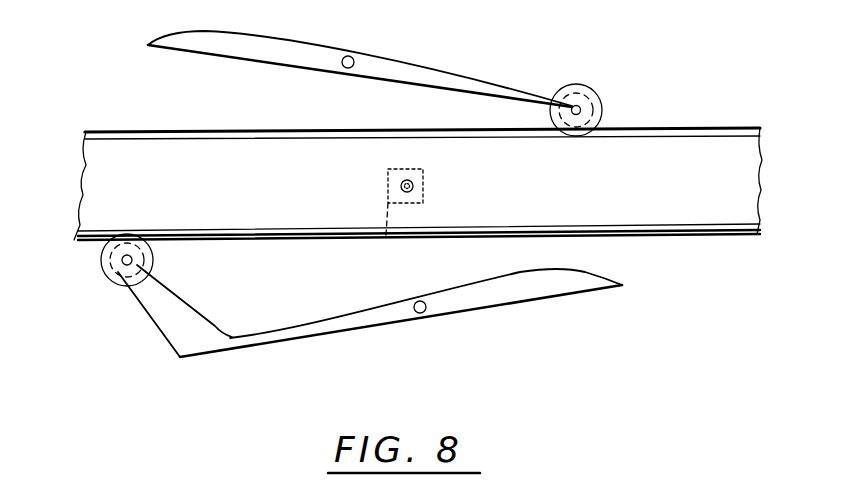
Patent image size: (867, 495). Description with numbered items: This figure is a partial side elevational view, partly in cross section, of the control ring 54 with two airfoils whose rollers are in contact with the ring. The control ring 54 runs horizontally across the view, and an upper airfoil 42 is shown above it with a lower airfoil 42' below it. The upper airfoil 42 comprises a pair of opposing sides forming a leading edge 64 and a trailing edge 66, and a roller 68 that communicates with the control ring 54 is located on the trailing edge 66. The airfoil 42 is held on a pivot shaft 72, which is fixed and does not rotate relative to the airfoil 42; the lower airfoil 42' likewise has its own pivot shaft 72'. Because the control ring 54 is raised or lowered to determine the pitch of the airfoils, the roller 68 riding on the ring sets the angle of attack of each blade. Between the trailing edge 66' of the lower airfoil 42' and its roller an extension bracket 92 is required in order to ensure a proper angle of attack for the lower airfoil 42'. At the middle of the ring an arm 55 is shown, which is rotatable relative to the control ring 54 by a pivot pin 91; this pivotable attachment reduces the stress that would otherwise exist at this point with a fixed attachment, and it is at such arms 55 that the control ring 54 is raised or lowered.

The airfoil 42 is at (360, 69).
The lower airfoil 42' is at (401, 313).
The control ring 54 is at (697, 215).
The arms 55 is at (386, 235).
The leading edge 64 is at (148, 45).
The trailing edge 66 is at (618, 97).
The trailing edge of lower airfoil 66' is at (197, 377).
The roller 68 is at (578, 83).
The pivot shaft 72 is at (376, 40).
The pivot shaft of lower airfoil 72' is at (438, 330).
The pivot pin 91 is at (416, 197).
The extension bracket 92 is at (160, 322).